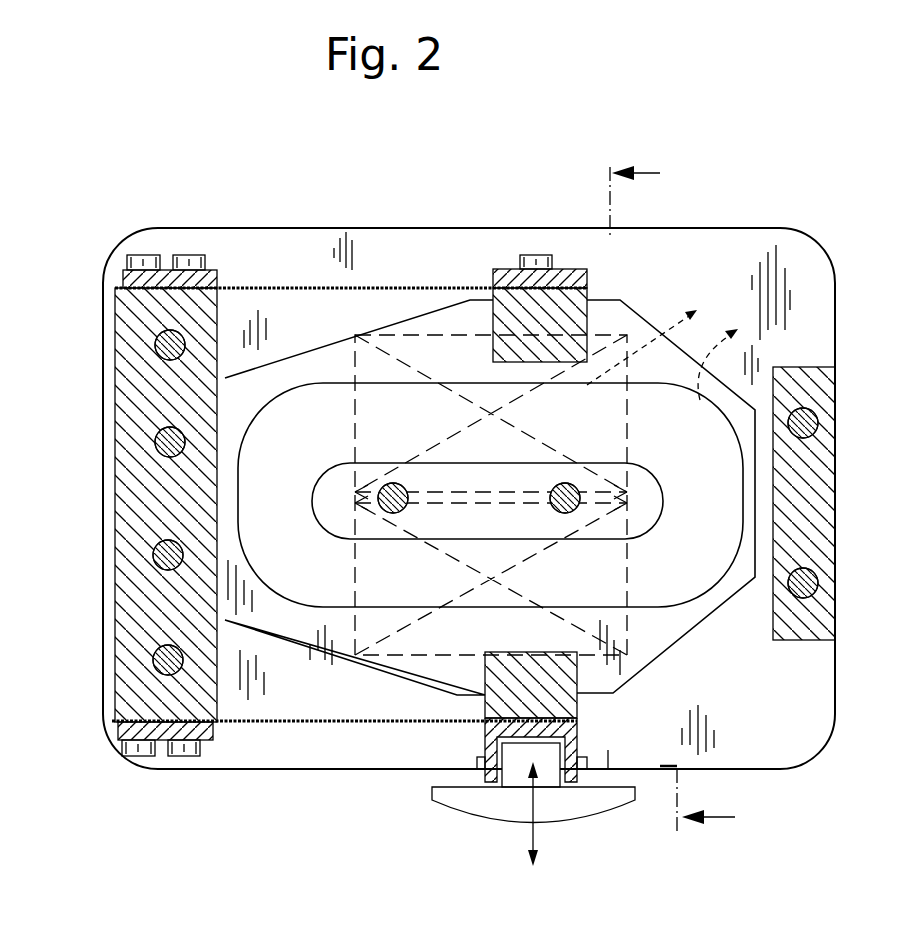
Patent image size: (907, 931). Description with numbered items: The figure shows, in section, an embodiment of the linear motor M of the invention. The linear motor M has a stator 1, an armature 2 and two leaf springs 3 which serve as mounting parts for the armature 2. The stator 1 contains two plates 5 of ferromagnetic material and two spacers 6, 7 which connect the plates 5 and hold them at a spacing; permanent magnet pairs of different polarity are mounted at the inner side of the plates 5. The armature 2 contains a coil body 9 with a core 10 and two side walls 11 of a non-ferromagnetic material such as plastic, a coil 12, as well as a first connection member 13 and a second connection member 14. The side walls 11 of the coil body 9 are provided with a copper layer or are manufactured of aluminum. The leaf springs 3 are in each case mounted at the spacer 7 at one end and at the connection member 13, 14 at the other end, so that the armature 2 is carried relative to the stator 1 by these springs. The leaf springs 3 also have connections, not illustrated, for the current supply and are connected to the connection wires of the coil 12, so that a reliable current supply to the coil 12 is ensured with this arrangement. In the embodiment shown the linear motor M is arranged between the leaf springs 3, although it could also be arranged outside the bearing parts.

The stator 1 is at (286, 222).
The armature 2 is at (694, 674).
The leaf springs 3 is at (376, 287).
The plates 5 is at (780, 250).
The spacer 6 is at (813, 507).
The spacer 7 is at (130, 515).
The coil body 9 is at (637, 327).
The core 10 is at (470, 518).
The side walls 11 is at (303, 640).
The coil 12 is at (715, 598).
The first connection member 13 is at (495, 727).
The second connection member 14 is at (497, 268).
The linear motor M is at (203, 200).